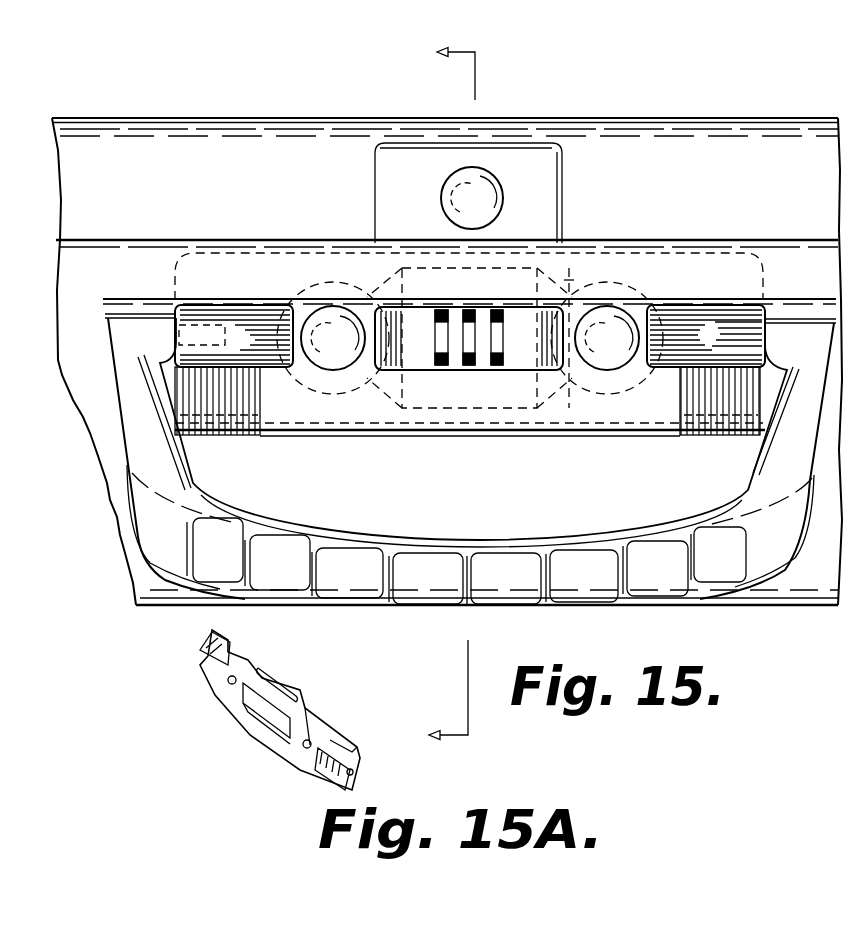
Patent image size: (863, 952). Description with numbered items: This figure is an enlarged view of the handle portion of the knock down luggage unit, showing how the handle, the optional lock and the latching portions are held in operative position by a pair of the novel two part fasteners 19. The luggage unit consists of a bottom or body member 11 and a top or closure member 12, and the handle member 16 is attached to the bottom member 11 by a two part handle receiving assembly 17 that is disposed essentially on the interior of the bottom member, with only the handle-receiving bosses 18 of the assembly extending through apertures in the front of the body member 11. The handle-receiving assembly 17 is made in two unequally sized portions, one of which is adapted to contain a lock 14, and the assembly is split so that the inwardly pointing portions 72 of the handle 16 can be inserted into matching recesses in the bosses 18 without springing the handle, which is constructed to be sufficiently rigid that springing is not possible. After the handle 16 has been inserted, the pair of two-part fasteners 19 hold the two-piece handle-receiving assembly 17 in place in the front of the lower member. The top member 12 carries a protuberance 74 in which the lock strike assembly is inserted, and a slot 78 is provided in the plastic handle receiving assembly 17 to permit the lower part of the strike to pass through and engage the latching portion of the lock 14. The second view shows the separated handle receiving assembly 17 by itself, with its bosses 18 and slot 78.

In FIG. 15, the bottom or body member 11 is at (778, 598).
In FIG. 15, the top or closure member 12 is at (745, 142).
In FIG. 15, the lock 14 is at (515, 358).
In FIG. 15, the handle member 16 is at (436, 605).
In FIG. 15, the handle receiving assembly 17 is at (668, 254).
In FIG. 15A, the handle receiving assembly 17 is at (233, 695).
In FIG. 15, the handle-receiving bosses 18 is at (238, 325).
In FIG. 15A, the handle-receiving bosses 18 is at (203, 671).
In FIG. 15, the two part fastener 19 is at (443, 210).
In FIG. 15, the inwardly pointing portions 72 is at (217, 435).
In FIG. 15, the protuberance 74 is at (548, 196).
In FIG. 15A, the slot 78 is at (282, 683).